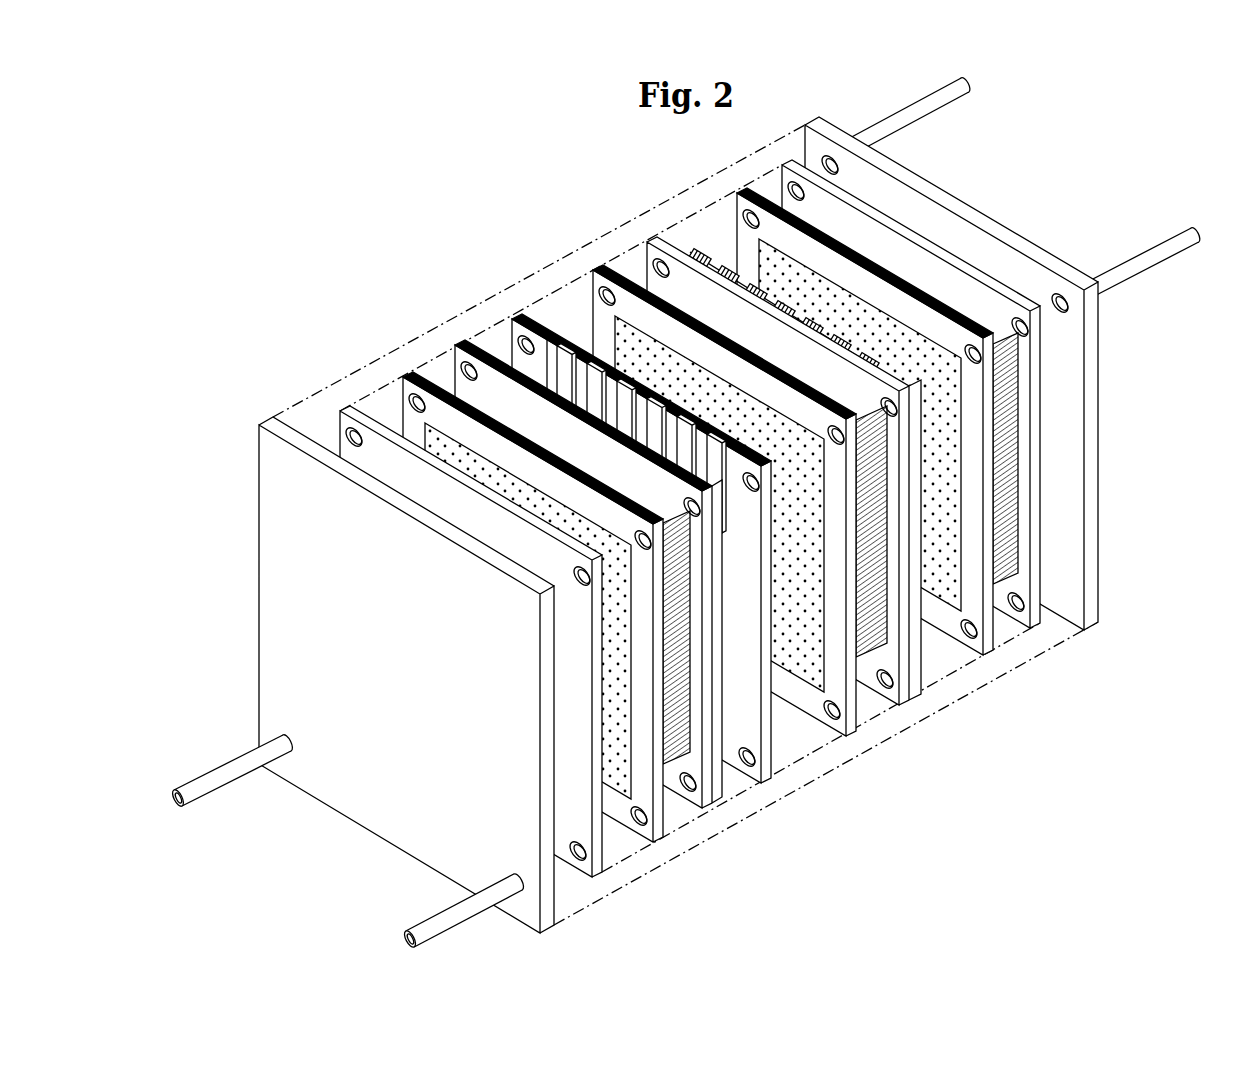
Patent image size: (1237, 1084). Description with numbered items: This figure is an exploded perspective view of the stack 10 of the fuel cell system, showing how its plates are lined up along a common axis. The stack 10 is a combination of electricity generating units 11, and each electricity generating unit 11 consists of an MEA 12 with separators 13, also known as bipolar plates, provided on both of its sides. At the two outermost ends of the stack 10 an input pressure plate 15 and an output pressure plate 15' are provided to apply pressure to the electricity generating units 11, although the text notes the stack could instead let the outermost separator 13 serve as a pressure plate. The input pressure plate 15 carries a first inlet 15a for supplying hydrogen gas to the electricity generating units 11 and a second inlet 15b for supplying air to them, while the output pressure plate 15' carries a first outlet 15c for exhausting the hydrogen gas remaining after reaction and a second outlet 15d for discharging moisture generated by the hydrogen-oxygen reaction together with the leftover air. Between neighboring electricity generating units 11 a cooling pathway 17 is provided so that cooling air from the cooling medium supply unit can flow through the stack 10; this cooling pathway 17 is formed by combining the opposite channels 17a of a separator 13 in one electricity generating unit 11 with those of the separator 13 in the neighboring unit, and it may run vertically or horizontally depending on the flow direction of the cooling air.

The stack 10 is at (685, 512).
The electricity generating unit 11 is at (720, 536).
The MEA 12 is at (852, 714).
The separator 13 is at (902, 694).
The input pressure plate 15 is at (980, 373).
The output pressure plate 15' is at (438, 681).
The first inlet 15a is at (908, 111).
The second inlet 15b is at (1142, 248).
The first outlet 15c is at (425, 923).
The second outlet 15d is at (212, 771).
The cooling pathway 17 is at (702, 244).
The channel 17a is at (503, 370).